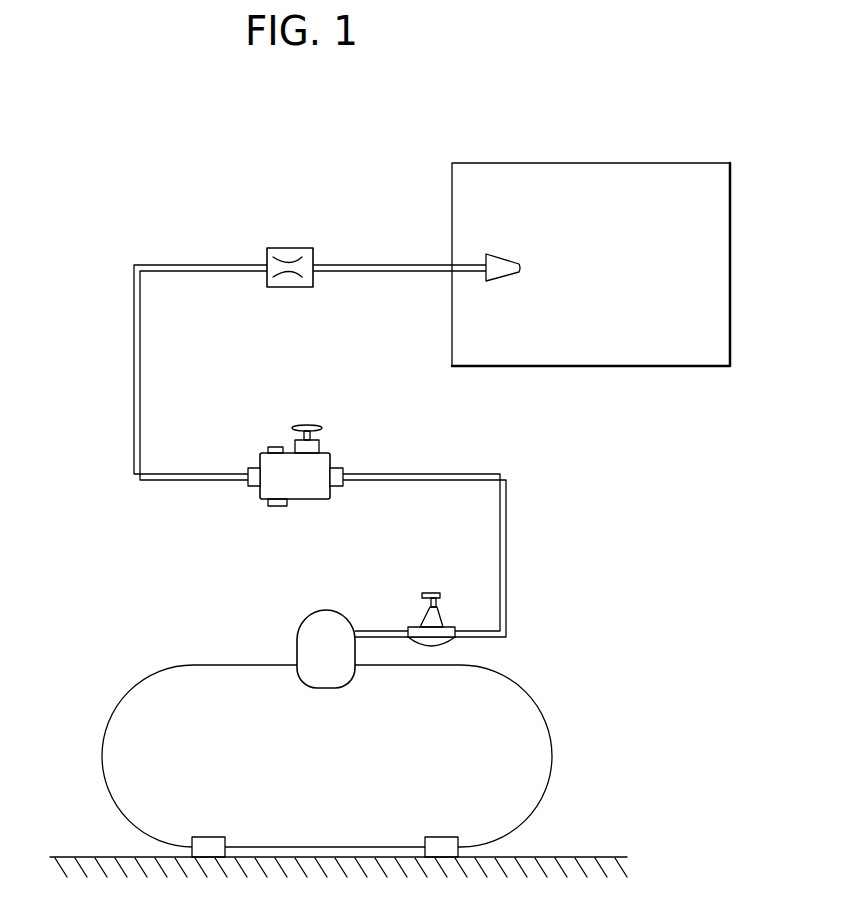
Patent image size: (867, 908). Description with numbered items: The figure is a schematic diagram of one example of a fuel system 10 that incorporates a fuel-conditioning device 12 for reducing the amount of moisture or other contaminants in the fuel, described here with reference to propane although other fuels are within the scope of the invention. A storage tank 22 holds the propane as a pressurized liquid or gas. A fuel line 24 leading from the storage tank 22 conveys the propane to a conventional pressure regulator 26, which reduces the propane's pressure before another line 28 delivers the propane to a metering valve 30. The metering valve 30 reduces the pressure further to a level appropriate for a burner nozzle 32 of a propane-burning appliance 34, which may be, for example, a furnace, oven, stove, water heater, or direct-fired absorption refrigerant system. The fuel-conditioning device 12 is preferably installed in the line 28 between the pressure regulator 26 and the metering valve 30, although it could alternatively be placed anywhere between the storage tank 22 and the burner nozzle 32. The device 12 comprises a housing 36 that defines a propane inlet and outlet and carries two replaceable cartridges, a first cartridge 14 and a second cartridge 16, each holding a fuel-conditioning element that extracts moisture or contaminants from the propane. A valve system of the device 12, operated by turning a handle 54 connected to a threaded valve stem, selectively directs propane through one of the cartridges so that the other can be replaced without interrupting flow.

The fuel system 10 is at (152, 203).
The fuel-conditioning device 12 is at (300, 503).
The first cartridge 14 is at (278, 446).
The second cartridge 16 is at (272, 507).
The storage tank 22 is at (172, 665).
The fuel line 24 is at (378, 628).
The pressure regulator 26 is at (443, 618).
The line 28 is at (134, 352).
The metering valve 30 is at (282, 248).
The burner nozzle 32 is at (498, 280).
The propane-burning appliance 34 is at (515, 163).
The housing 36 is at (332, 458).
The handle 54 is at (307, 423).